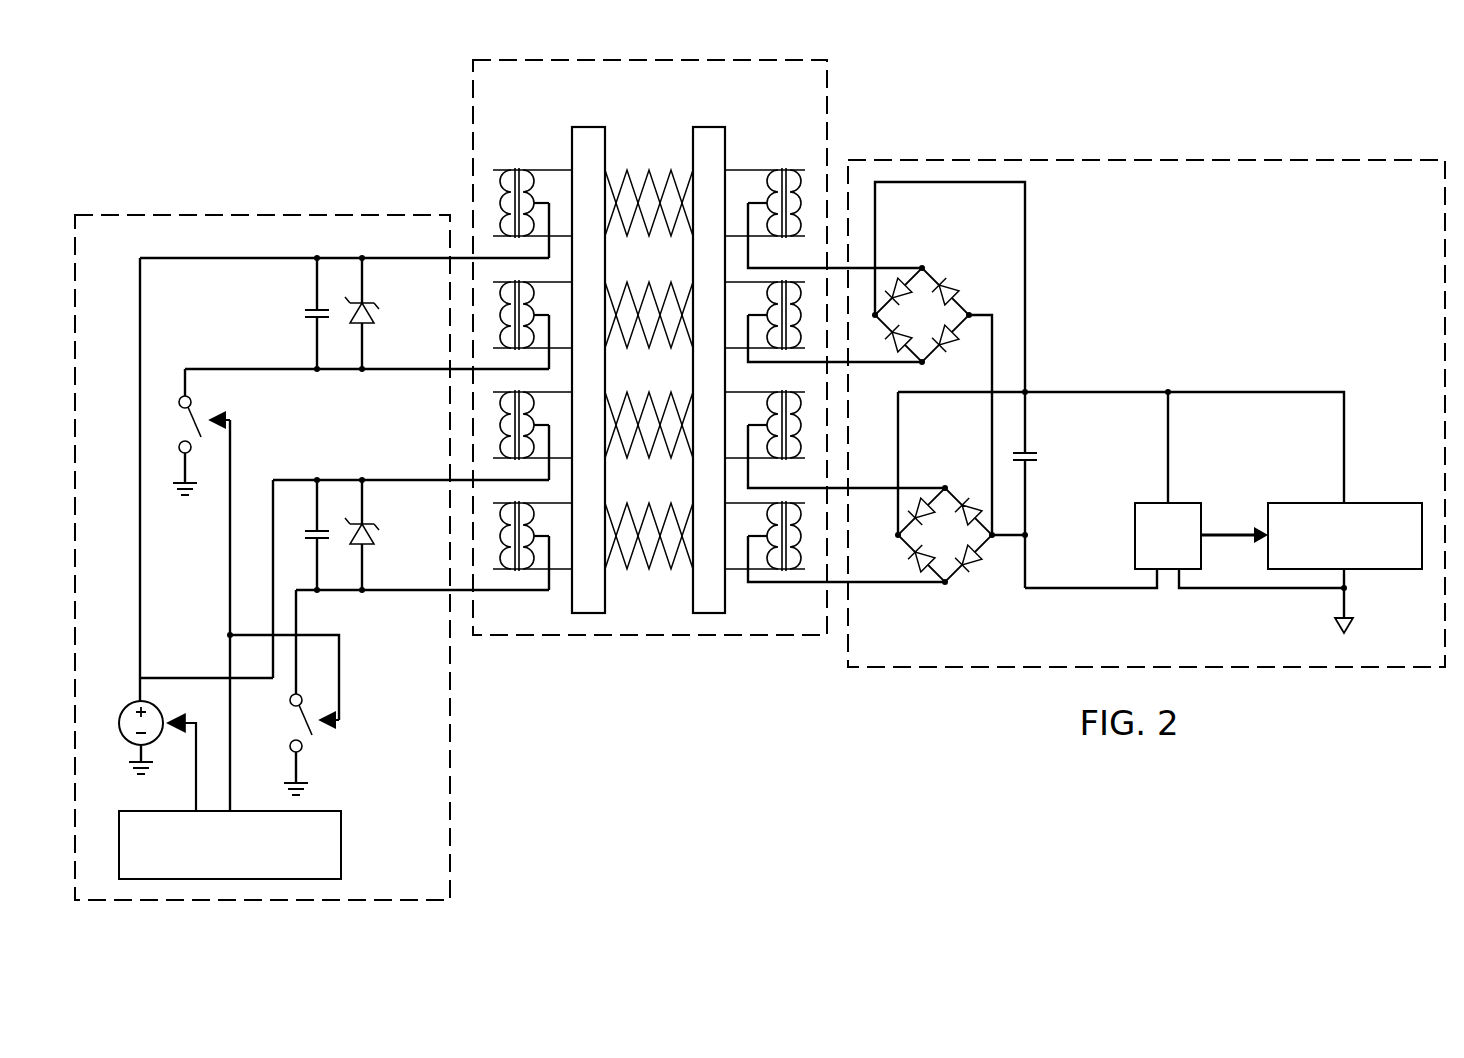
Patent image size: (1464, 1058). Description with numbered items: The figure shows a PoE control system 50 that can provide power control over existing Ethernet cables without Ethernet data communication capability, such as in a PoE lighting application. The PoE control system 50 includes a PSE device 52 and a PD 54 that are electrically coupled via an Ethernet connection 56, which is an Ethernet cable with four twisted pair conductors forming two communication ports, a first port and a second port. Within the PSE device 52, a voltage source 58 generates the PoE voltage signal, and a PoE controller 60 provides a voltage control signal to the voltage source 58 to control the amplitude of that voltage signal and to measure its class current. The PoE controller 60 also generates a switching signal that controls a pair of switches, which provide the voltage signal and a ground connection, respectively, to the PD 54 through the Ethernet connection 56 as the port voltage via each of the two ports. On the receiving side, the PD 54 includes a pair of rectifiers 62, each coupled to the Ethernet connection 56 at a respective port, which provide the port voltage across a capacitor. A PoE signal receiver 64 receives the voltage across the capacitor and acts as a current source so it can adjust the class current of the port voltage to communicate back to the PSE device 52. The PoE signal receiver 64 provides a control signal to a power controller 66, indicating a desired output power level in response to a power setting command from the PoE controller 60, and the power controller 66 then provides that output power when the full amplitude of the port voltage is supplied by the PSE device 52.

The PoE control system 50 is at (906, 79).
The PSE device 52 is at (206, 213).
The PD 54 is at (1280, 157).
The Ethernet connection 56 is at (579, 58).
The voltage source 58 is at (121, 736).
The PoE controller 60 is at (343, 848).
The rectifiers 62 is at (961, 271).
The PoE signal receiver 64 is at (1135, 548).
The power controller 66 is at (1367, 503).